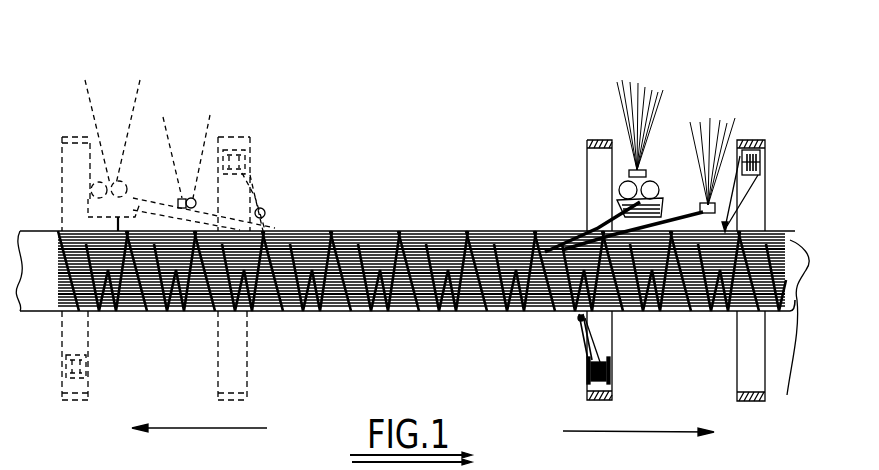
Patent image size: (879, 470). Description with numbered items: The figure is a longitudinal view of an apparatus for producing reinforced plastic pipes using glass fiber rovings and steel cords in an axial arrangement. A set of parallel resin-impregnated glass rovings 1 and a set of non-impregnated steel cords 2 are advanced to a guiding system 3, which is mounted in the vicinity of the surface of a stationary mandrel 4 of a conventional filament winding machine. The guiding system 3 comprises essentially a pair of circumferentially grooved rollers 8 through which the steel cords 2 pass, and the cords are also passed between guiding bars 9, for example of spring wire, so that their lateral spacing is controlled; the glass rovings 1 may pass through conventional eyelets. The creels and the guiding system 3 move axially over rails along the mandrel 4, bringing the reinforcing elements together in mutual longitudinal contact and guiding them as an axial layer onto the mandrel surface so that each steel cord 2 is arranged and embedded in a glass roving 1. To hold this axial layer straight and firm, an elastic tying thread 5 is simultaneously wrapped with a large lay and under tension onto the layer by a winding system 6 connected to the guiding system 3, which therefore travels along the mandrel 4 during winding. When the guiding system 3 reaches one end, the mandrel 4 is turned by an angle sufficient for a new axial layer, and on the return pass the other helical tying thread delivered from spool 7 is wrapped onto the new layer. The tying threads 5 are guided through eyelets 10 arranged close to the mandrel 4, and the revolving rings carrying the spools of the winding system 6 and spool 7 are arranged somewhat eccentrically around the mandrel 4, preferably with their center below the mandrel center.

The resin-impregnated glass rovings 1 is at (713, 127).
The steel cords 2 is at (637, 100).
The guiding system 3 is at (586, 160).
The mandrel 4 is at (798, 332).
The elastic tying thread 5 is at (312, 302).
The winding system 6 is at (611, 381).
The spool 7 is at (762, 158).
The grooved rollers 8 is at (120, 183).
The guiding bars 9 is at (583, 227).
The eyelets 10 is at (583, 342).